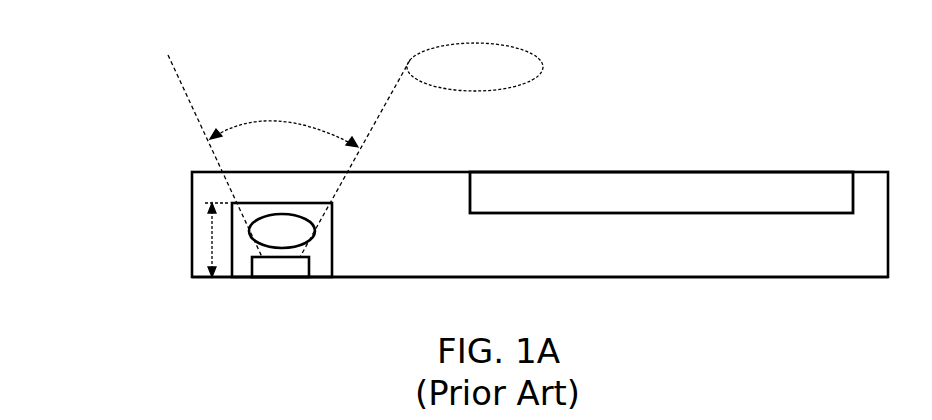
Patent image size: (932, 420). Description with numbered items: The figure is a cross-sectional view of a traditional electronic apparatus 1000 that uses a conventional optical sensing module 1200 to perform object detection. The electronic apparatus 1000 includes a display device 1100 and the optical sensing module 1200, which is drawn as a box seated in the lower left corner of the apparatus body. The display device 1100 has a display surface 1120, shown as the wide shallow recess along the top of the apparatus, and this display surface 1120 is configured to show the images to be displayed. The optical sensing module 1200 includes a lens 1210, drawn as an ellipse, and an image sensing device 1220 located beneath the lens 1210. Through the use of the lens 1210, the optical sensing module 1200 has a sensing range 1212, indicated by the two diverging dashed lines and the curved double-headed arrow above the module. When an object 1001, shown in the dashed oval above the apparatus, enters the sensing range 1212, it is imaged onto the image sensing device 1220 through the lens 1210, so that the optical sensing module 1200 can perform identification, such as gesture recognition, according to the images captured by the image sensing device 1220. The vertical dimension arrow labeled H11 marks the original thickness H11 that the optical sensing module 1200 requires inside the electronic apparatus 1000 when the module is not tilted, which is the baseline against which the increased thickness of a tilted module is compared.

The electronic apparatus 1000 is at (790, 278).
The display device 1100 is at (605, 195).
The display surface 1120 is at (647, 168).
The optical sensing module 1200 is at (336, 243).
The lens 1210 is at (262, 243).
The image sensing device 1220 is at (298, 268).
The sensing range 1212 is at (267, 118).
The object 1001 is at (543, 67).
The original thickness H11 is at (210, 222).